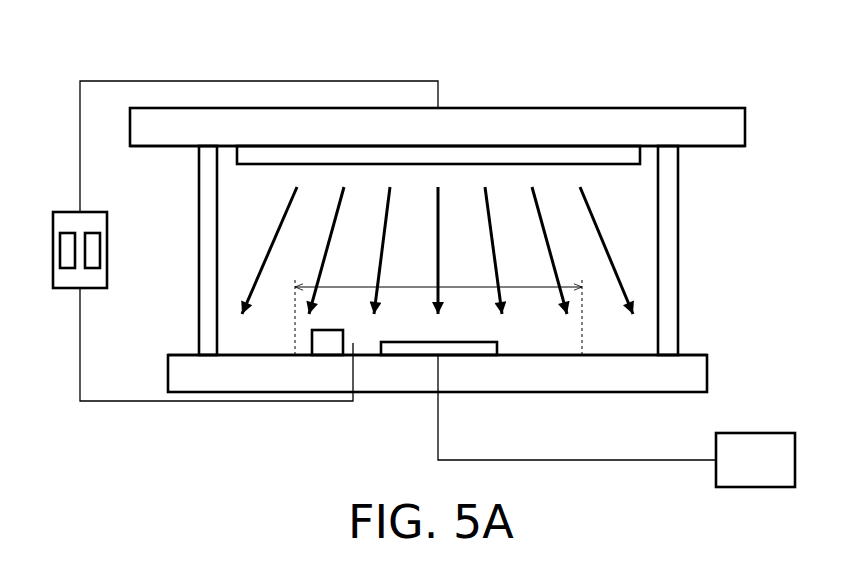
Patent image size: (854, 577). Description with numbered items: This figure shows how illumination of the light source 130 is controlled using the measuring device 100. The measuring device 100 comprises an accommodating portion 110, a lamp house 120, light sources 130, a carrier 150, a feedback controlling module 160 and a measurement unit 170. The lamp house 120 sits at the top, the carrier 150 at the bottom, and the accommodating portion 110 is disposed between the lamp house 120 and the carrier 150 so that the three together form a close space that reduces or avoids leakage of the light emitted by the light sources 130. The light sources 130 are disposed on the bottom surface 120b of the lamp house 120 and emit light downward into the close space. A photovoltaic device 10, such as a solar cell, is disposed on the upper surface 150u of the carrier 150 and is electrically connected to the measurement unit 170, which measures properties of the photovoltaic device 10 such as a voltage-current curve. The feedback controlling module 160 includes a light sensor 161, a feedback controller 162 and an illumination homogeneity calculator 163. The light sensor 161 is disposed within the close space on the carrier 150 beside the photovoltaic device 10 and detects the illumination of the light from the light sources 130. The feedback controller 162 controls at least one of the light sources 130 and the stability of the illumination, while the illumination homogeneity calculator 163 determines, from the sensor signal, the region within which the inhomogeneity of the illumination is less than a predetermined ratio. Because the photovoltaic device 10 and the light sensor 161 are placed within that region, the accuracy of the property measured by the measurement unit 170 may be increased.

The measuring device 100 is at (560, 60).
The accommodating portion 110 is at (678, 253).
The lamp house 120 is at (613, 126).
The bottom surface of the lamp house 120b is at (719, 148).
The light source 130 is at (477, 153).
The carrier 150 is at (695, 372).
The upper surface of the carrier 150u is at (600, 355).
The feedback controlling module 160 is at (235, 282).
The light sensor 161 is at (355, 340).
The feedback controller 162 is at (67, 268).
The illumination homogeneity calculator 163 is at (108, 336).
The measurement unit 170 is at (776, 472).
The photovoltaic device 10 is at (423, 350).